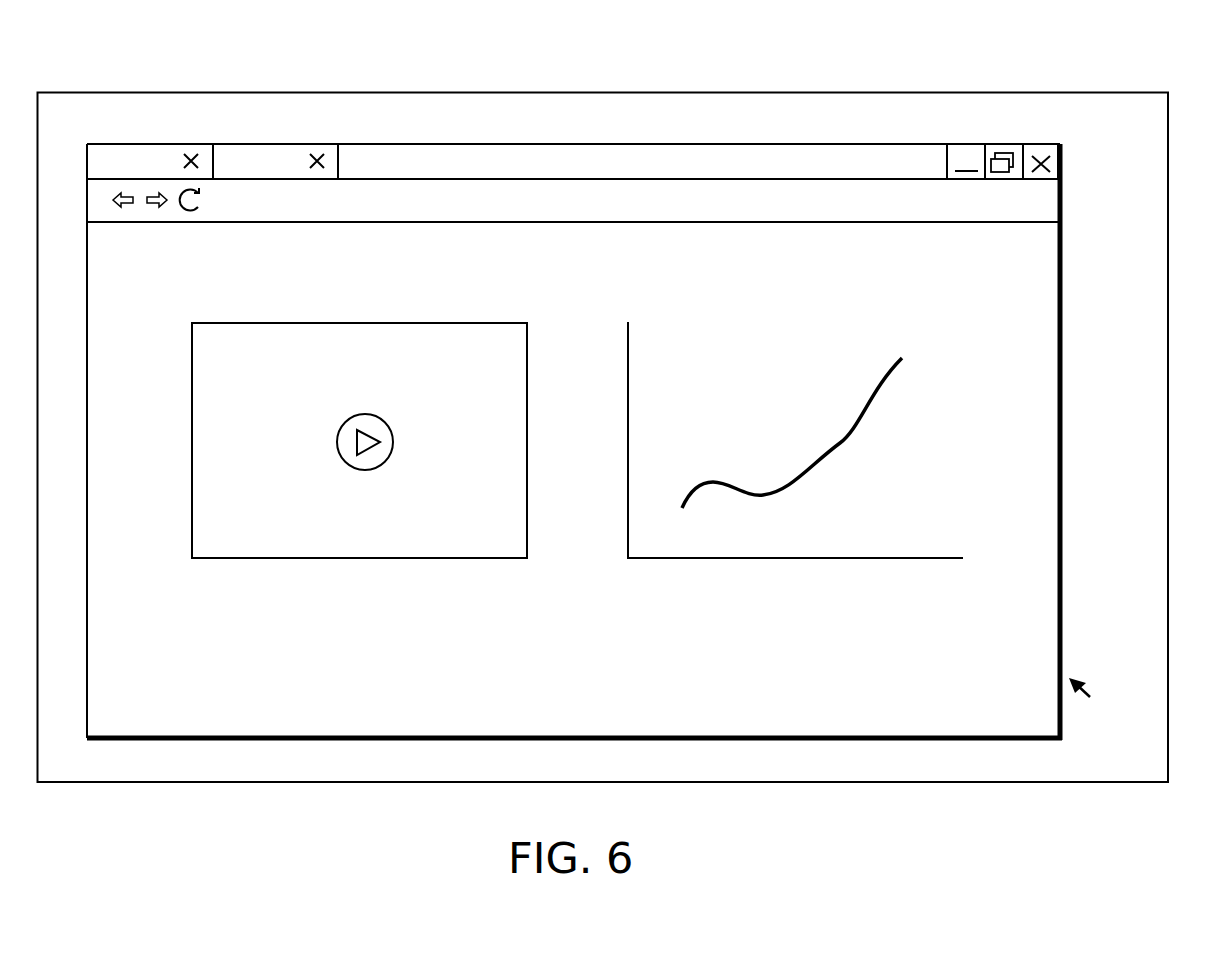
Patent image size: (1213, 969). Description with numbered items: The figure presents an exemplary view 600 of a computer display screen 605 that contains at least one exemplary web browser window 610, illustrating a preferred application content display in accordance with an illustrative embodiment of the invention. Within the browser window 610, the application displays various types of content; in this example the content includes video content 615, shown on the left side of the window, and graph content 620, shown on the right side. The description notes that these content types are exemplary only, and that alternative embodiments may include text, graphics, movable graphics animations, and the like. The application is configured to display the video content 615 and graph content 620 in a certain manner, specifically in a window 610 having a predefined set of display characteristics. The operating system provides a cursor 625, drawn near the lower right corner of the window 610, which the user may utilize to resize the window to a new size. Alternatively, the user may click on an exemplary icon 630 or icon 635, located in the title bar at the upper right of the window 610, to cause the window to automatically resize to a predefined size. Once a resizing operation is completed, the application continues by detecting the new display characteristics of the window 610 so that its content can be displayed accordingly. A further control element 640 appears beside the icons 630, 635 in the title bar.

The view 600 is at (1018, 52).
The display screen 605 is at (657, 92).
The web browser window 610 is at (1063, 195).
The video content 615 is at (354, 560).
The graph content 620 is at (789, 560).
The cursor 625 is at (1090, 697).
The icon 630 is at (960, 144).
The icon 635 is at (1010, 144).
The close button 640 is at (1040, 144).